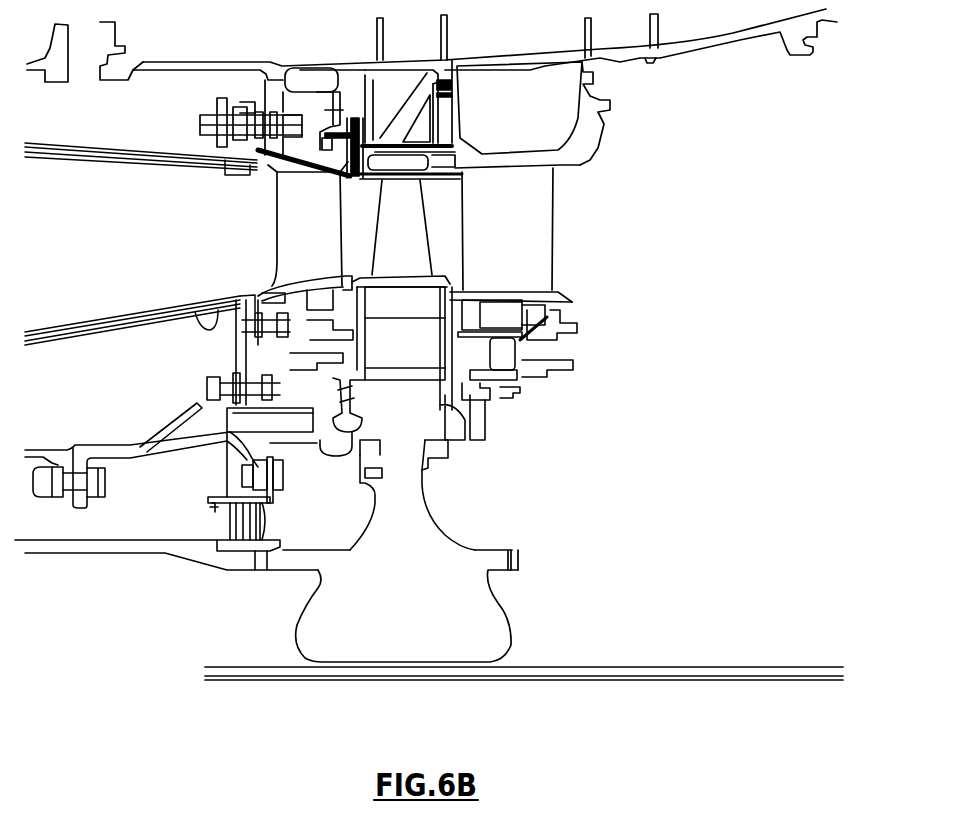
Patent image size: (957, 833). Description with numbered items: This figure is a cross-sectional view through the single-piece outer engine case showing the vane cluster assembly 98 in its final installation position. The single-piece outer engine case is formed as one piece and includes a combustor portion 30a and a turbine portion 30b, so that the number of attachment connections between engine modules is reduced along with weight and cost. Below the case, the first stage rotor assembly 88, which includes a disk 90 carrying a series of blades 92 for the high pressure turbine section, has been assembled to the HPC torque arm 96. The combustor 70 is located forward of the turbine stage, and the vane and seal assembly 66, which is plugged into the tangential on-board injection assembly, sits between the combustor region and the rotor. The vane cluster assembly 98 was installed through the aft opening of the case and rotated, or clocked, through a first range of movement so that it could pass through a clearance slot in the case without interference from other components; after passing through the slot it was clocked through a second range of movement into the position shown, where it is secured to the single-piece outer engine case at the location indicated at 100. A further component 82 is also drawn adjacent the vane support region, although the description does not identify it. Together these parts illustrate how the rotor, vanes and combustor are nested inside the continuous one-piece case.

The combustor portion 30a is at (219, 62).
The turbine portion 30b is at (386, 60).
The vane support web 82 is at (412, 98).
The vane cluster securing location 100 is at (566, 78).
The vane and seal assembly 66 is at (276, 216).
The combustor 70 is at (234, 296).
The blades 92 is at (417, 254).
The vane cluster assembly 98 is at (582, 220).
The first stage rotor assembly 88 is at (486, 502).
The disk 90 is at (419, 619).
The HPC torque arm 96 is at (234, 573).